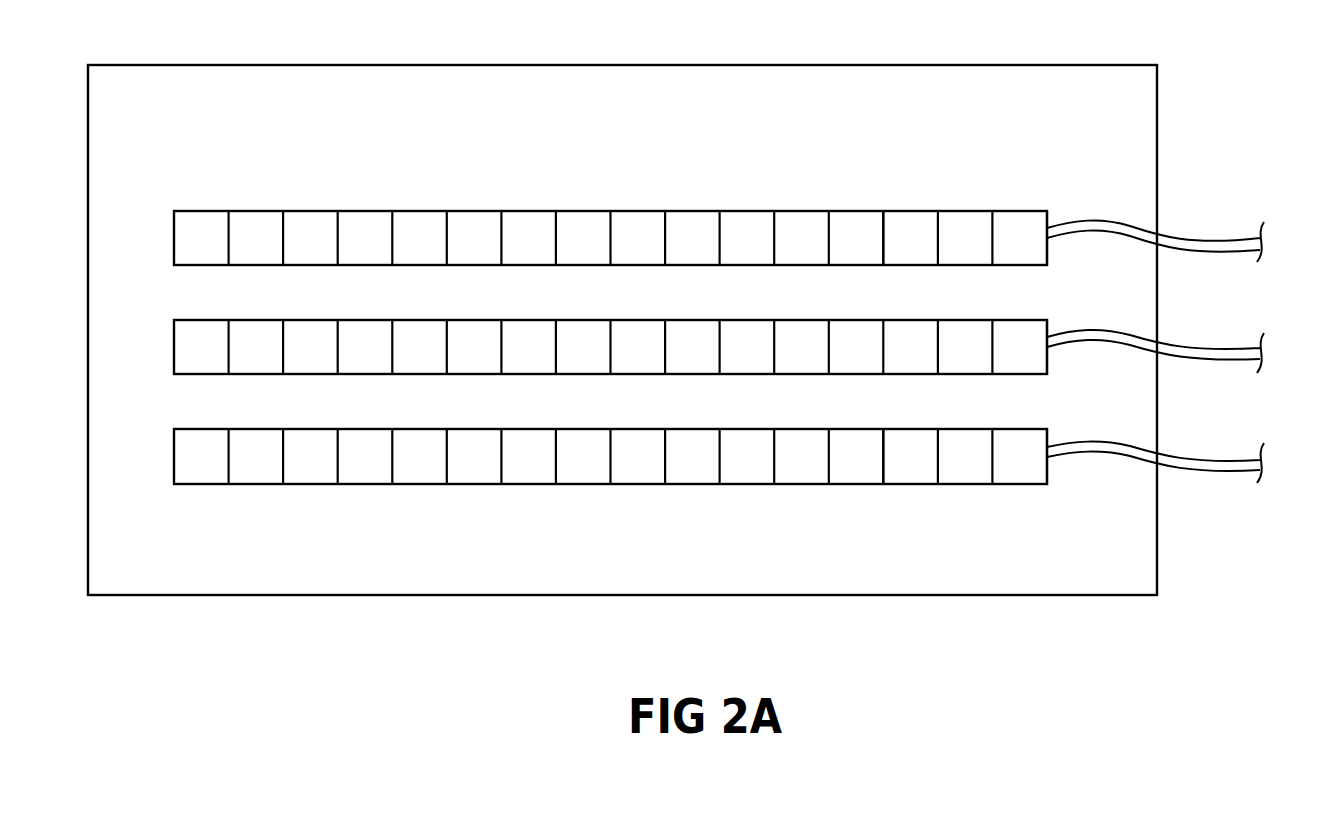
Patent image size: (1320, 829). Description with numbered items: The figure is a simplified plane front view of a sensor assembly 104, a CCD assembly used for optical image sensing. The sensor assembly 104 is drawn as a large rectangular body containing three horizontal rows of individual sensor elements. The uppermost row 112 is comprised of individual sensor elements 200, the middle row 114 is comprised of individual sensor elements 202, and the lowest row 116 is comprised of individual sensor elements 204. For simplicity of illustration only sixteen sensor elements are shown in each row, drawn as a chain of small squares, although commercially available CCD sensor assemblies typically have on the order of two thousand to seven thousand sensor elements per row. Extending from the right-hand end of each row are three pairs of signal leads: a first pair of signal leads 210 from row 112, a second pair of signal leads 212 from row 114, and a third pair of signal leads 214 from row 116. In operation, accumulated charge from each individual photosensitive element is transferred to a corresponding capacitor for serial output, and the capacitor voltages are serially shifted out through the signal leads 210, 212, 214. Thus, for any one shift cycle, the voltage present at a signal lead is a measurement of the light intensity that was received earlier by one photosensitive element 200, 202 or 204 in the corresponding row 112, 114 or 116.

The sensor assembly 104 is at (181, 569).
The row 112 is at (641, 186).
The row 114 is at (655, 340).
The row 116 is at (654, 509).
The individual sensor elements 200 is at (1016, 209).
The individual sensor elements 202 is at (1030, 318).
The individual sensor elements 204 is at (908, 486).
The pair of signal leads 210 is at (1228, 237).
The pair of signal leads 212 is at (1226, 347).
The pair of signal leads 214 is at (1228, 458).